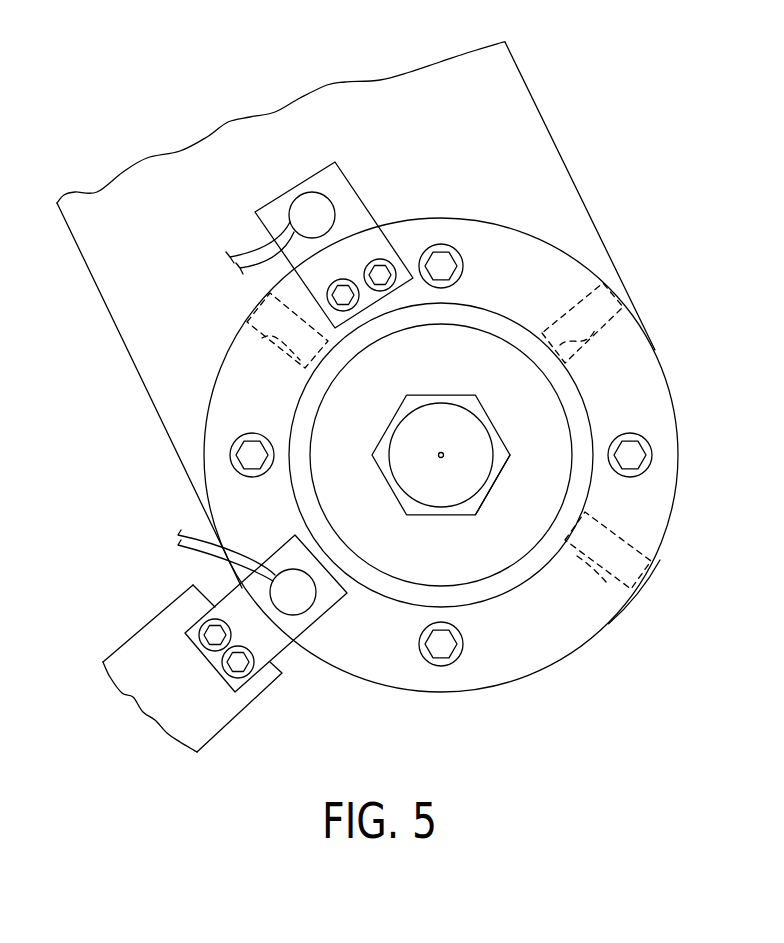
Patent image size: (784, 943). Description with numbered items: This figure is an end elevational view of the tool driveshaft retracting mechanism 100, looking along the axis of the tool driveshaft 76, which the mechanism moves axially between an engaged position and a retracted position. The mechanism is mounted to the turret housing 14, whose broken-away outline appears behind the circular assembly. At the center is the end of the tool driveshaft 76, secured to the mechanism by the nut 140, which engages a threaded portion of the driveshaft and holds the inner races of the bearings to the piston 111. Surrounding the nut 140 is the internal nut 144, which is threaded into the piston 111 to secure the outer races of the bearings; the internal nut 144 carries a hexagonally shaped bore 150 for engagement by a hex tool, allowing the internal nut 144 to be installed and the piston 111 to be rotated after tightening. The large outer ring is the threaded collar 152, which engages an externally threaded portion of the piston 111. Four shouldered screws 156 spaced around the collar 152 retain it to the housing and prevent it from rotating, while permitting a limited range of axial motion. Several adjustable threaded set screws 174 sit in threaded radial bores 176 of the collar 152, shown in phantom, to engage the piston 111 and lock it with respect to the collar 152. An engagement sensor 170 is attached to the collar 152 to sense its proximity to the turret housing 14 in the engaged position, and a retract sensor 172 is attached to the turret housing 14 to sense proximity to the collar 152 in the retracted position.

The turret housing 14 is at (508, 122).
The tool driveshaft 76 is at (448, 435).
The tool driveshaft retracting mechanism 100 is at (632, 607).
The piston 111 is at (517, 577).
The nut 140 is at (500, 462).
The internal nut 144 is at (458, 571).
The hexagonally shaped bore 150 is at (494, 480).
The threaded collar 152 is at (370, 645).
The shouldered screws 156 is at (445, 248).
The engagement sensor 170 is at (312, 213).
The retract sensor 172 is at (297, 590).
The adjustable threaded set screws 174 is at (262, 298).
The threaded radial bores 176 is at (243, 338).